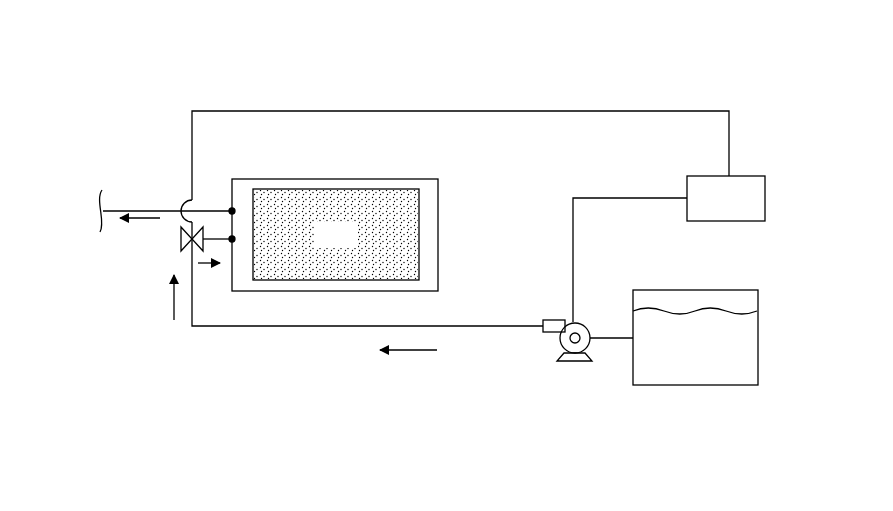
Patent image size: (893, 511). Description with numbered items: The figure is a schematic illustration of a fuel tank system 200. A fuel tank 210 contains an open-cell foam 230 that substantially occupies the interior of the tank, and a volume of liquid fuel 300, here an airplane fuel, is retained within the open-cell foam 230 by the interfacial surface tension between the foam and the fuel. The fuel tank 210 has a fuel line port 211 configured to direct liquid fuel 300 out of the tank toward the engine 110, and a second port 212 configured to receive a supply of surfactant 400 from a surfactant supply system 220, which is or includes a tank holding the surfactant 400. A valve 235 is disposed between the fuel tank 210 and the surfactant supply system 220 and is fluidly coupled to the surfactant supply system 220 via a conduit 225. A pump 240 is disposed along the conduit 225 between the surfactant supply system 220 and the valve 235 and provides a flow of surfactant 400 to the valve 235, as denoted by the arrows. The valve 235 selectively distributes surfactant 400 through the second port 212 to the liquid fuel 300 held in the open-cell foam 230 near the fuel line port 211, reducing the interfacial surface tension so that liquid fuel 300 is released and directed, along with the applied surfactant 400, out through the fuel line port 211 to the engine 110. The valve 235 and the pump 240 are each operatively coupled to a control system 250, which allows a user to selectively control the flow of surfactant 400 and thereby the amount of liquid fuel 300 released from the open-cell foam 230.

The fuel tank system 200 is at (166, 48).
The engine 110 is at (80, 190).
The fuel line port 211 is at (233, 209).
The second port 212 is at (233, 240).
The fuel tank 210 is at (440, 205).
The open-cell foam 230 is at (420, 247).
The liquid fuel 300 is at (318, 246).
The control system 250 is at (707, 211).
The surfactant supply system 220 is at (704, 290).
The surfactant 400 is at (677, 357).
The pump 240 is at (574, 362).
The valve 235 is at (183, 245).
The conduit 225 is at (251, 327).